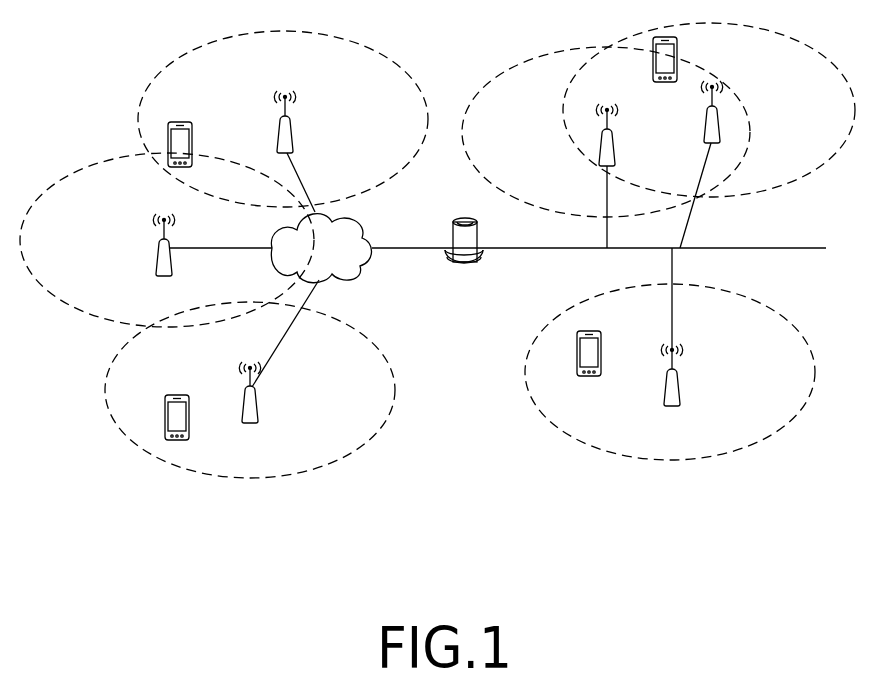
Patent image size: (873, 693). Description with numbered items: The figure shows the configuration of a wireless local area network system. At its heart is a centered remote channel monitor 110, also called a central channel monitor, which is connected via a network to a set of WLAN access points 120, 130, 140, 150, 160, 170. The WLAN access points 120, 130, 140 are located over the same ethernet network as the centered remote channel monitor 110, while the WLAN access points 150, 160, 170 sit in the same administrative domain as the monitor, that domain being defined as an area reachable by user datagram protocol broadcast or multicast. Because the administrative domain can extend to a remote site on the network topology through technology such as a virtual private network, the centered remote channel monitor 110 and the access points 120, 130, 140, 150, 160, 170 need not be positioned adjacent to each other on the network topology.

The centered remote channel monitor 110 is at (462, 282).
The WLAN access point 120 is at (598, 146).
The WLAN access point 130 is at (705, 120).
The WLAN access point 140 is at (681, 386).
The WLAN access point 150 is at (294, 128).
The WLAN access point 160 is at (155, 262).
The WLAN access point 170 is at (259, 400).